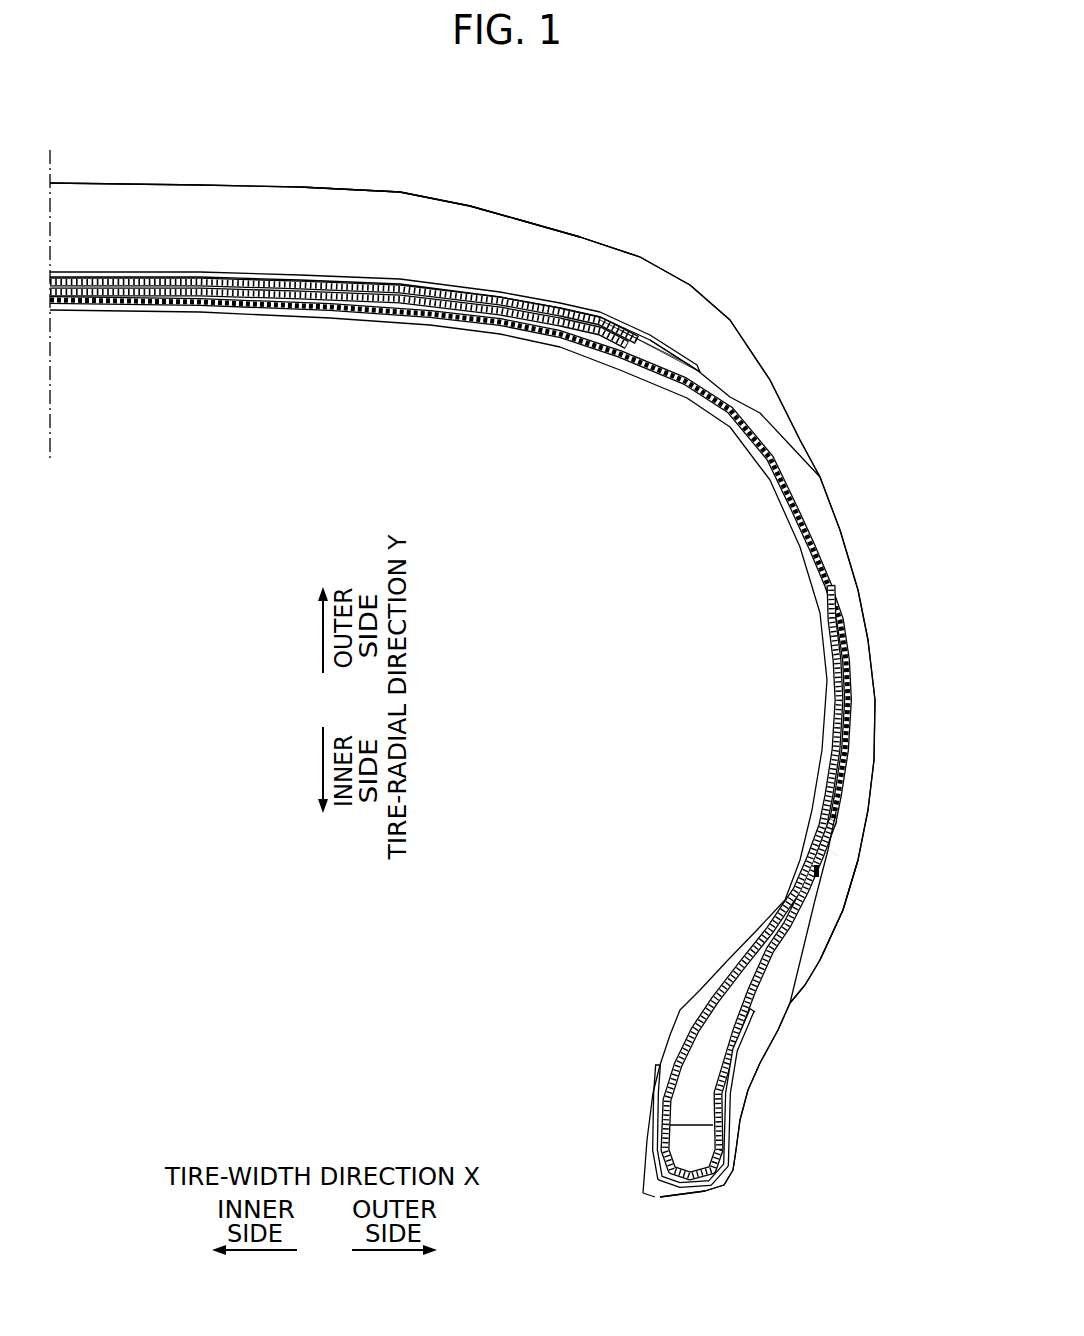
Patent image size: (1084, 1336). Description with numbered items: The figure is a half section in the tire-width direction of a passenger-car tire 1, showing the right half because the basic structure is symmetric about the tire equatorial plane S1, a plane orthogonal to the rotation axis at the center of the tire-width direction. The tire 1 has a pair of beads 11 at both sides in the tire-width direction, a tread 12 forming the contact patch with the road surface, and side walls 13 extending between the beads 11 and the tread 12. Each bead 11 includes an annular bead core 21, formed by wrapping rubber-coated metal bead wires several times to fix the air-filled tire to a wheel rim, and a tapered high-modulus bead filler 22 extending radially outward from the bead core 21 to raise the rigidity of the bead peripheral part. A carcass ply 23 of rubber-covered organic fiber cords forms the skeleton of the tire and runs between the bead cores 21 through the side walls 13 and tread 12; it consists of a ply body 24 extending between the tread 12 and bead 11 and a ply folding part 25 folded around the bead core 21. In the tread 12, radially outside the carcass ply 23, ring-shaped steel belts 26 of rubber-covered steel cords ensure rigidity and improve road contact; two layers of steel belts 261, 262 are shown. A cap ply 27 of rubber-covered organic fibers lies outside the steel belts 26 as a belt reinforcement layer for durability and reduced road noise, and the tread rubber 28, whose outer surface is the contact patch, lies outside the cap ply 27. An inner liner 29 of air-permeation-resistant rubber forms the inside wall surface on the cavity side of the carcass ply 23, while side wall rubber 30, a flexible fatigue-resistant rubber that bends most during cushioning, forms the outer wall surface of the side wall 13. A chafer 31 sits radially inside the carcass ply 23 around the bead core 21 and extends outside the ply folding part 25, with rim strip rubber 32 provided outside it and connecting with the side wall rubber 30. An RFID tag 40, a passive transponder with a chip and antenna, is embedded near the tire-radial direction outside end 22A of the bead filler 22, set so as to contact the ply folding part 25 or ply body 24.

The tire 1 is at (888, 138).
The bead 11 is at (814, 1095).
The tread 12 is at (390, 138).
The side wall 13 is at (893, 490).
The bead core 21 is at (685, 1145).
The bead filler 22 is at (700, 1040).
The tire-radial direction outside end of the bead filler 22A is at (833, 822).
The carcass ply 23 is at (790, 484).
The ply body 24 is at (813, 549).
The ply folding part 25 is at (833, 855).
The steel belt 26 is at (343, 350).
The steel belt 261 is at (360, 366).
The steel belt 262 is at (330, 310).
The cap ply 27 is at (590, 307).
The tread rubber 28 is at (490, 222).
The inner liner 29 is at (813, 845).
The side wall rubber 30 is at (827, 902).
The chafer 31 is at (653, 1190).
The rim strip rubber 32 is at (755, 1035).
The RFID tag 40 is at (815, 870).
The tire equatorial plane S1 is at (50, 407).